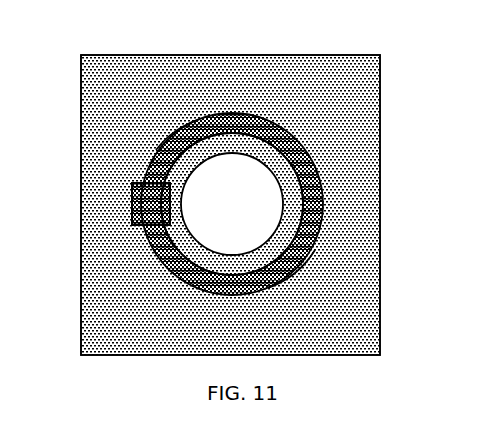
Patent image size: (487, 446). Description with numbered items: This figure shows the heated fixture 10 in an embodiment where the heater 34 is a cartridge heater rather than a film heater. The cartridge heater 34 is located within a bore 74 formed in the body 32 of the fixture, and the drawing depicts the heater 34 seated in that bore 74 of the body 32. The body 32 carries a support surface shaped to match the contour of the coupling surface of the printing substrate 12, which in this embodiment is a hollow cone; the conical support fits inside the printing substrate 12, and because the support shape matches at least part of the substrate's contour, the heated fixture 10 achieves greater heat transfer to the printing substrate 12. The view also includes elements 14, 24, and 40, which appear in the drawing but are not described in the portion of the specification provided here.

The heated fixture 10 is at (42, 64).
The substrate 14 is at (372, 101).
The conductive ring 24 is at (267, 129).
The bore 74 is at (156, 148).
The ring portion 40 is at (300, 262).
The body 32 is at (290, 186).
The printing substrate 12 is at (223, 213).
The heater 34 is at (132, 201).